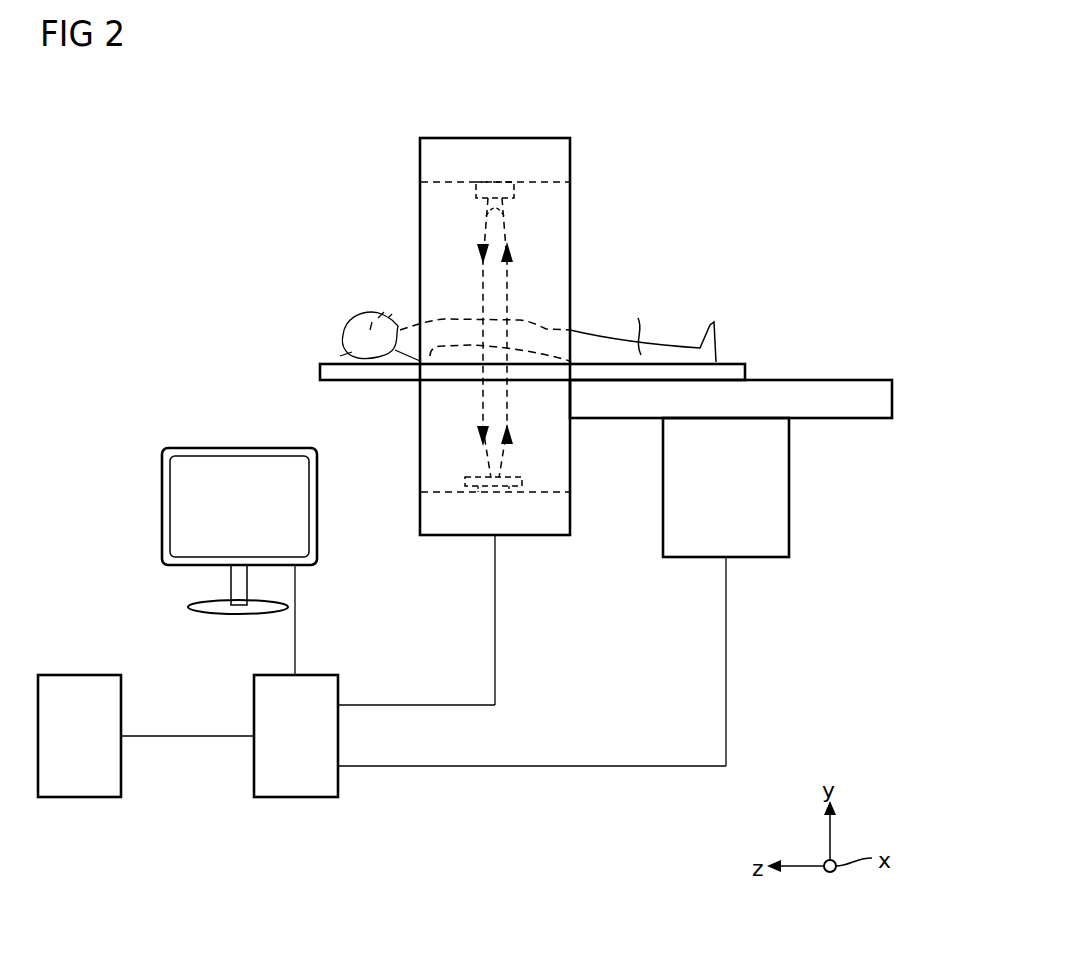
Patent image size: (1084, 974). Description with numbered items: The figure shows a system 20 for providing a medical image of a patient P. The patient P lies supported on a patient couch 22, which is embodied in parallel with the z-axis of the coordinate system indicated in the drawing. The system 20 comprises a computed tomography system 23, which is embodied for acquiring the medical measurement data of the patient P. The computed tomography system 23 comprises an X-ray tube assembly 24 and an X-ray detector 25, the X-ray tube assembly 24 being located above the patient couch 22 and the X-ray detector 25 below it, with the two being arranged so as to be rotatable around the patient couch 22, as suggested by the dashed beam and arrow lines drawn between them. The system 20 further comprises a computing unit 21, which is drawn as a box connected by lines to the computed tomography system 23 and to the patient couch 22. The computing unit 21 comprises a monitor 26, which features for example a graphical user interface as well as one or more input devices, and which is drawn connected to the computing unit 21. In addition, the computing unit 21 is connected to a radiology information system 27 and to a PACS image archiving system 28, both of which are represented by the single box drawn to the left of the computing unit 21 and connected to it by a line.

The system 20 is at (200, 185).
The computing unit 21 is at (296, 798).
The patient couch 22 is at (730, 362).
The computed tomography system 23 is at (497, 115).
The X-ray tube assembly 24 is at (514, 190).
The X-ray detector 25 is at (523, 482).
The monitor 26 is at (241, 447).
The radiology information system 27 is at (80, 798).
The PACS image archiving system 28 is at (79, 736).